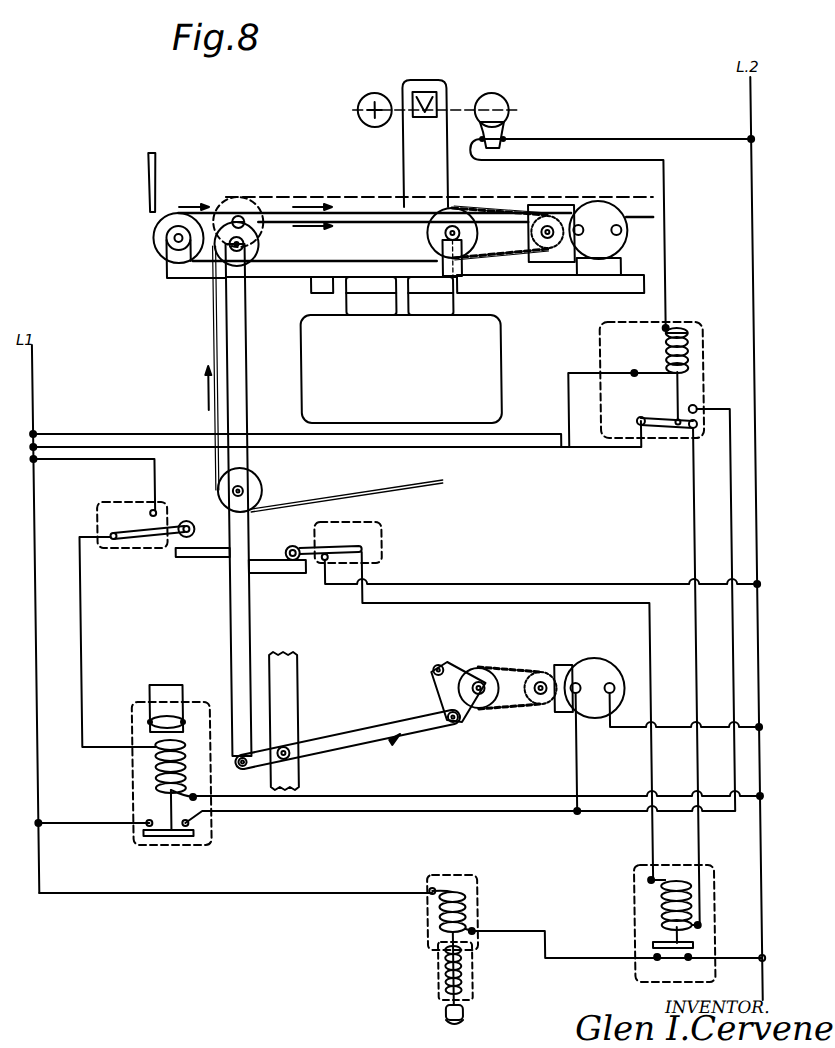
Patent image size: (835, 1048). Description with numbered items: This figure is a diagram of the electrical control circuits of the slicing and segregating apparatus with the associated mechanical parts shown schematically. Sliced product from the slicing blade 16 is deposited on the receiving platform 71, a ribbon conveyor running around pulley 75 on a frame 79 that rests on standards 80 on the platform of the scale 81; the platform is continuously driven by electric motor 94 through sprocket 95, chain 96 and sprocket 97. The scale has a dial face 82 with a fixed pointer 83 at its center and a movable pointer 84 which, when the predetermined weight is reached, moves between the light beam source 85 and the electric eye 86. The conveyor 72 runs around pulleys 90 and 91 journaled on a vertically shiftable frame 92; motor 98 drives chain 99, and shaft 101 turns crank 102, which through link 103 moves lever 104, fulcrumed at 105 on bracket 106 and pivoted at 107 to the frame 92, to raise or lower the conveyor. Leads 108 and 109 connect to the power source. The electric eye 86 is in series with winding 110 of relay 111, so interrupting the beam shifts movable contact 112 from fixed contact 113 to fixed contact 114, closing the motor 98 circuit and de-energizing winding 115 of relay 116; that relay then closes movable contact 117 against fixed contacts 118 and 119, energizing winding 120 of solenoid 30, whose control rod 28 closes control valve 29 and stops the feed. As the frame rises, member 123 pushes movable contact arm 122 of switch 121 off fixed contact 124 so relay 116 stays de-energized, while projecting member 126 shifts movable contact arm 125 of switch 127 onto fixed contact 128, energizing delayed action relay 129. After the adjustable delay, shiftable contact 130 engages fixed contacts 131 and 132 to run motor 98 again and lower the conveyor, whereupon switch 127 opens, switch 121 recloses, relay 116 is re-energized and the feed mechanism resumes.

The slicing blade 16 is at (152, 210).
The start-and-stop shaft 28 is at (432, 952).
The control valve 29 is at (438, 975).
The solenoid 30 is at (470, 907).
The receiving platform 71 is at (232, 216).
The conveyor 72 is at (350, 214).
The pulley 75 is at (167, 256).
The frame 79 is at (517, 288).
The standards 80 is at (346, 300).
The scale 81 is at (401, 369).
The dial face 82 is at (438, 98).
The fixed pointer 83 is at (429, 93).
The movable pointer 84 is at (422, 112).
The light beam source 85 is at (378, 95).
The electric eye 86 is at (503, 101).
The pulley 90 is at (254, 245).
The pulley 91 is at (258, 483).
The frame 92 is at (228, 620).
The electric motor 94 is at (600, 205).
The sprocket 95 is at (553, 248).
The chain 96 is at (505, 212).
The sprocket 97 is at (460, 214).
The motor 98 is at (598, 660).
The chain 99 is at (513, 668).
The shaft 101 is at (480, 708).
The crank 102 is at (462, 667).
The link 103 is at (432, 699).
The lever 104 is at (392, 738).
The fulcrum 105 is at (288, 760).
The bracket 106 is at (296, 703).
The pivot 107 is at (237, 769).
The lead 108 is at (753, 113).
The lead 109 is at (34, 401).
The winding 110 is at (680, 318).
The relay 111 is at (708, 340).
The movable contact 112 is at (660, 432).
The fixed contact 113 is at (692, 432).
The fixed contact 114 is at (698, 407).
The winding 115 is at (699, 906).
The relay 116 is at (712, 884).
The movable contact 117 is at (660, 944).
The fixed contact 118 is at (698, 955).
The fixed contact 119 is at (650, 960).
The winding 120 is at (470, 888).
The switch 121 is at (385, 538).
The movable contact arm 122 is at (292, 546).
The member 123 is at (288, 575).
The fixed contact 124 is at (341, 570).
The movable contact arm 125 is at (170, 524).
The projecting member 126 is at (186, 558).
The switch 127 is at (130, 552).
The fixed contact 128 is at (148, 510).
The delayed action relay 129 is at (140, 718).
The shiftable contact 130 is at (178, 840).
The fixed contact 131 is at (142, 821).
The fixed contact 132 is at (186, 827).